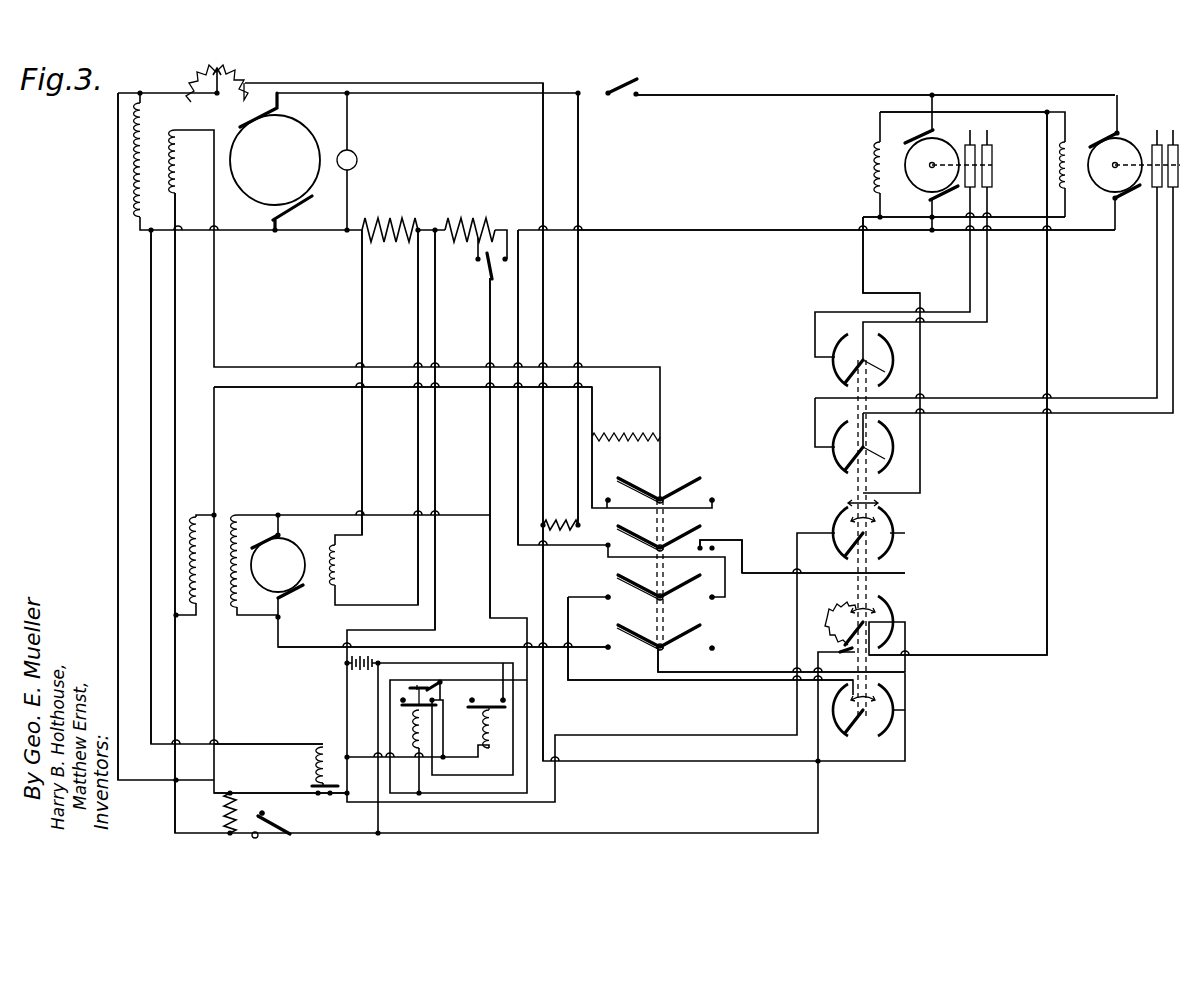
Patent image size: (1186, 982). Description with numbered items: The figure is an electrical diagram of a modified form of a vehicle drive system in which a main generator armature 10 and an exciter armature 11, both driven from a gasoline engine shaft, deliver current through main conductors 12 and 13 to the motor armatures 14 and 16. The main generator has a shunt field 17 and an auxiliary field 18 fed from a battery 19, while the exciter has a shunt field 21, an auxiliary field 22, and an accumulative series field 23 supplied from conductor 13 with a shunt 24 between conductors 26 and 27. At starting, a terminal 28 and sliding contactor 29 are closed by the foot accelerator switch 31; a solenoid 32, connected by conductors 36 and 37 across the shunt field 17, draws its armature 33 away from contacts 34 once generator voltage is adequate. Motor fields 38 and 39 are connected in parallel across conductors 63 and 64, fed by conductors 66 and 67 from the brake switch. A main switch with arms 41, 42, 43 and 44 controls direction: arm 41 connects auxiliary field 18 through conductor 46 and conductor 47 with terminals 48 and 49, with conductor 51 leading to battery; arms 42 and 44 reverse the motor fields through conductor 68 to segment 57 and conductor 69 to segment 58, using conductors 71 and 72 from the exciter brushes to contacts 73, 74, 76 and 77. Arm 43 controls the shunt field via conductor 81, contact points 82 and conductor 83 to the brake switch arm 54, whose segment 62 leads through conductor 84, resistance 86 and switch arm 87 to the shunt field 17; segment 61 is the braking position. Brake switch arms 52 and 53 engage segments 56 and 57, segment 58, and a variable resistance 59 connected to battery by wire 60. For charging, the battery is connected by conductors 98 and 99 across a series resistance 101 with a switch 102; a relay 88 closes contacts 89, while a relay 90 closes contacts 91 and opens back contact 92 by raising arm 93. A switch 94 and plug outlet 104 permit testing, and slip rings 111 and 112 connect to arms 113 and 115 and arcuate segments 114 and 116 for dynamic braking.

The main generator armature 10 is at (298, 130).
The exciter armature 11 is at (292, 550).
The main conductor 12 is at (693, 94).
The main conductor 13 is at (693, 229).
The motor armature 14 is at (942, 153).
The motor armature 16 is at (1124, 143).
The shunt field 17 is at (134, 162).
The auxiliary field 18 is at (182, 162).
The battery 19 is at (349, 670).
The exciter shunt field 21 is at (243, 535).
The exciter auxiliary field 22 is at (190, 551).
The accumulative series field 23 is at (342, 560).
The shunt 24 is at (385, 244).
The conductor 26 is at (361, 303).
The conductor 27 is at (417, 303).
The terminal 28 is at (252, 830).
The sliding contactor 29 is at (262, 811).
The foot accelerator switch 31 is at (282, 826).
The solenoid 32 is at (280, 768).
The armature 33 is at (324, 744).
The contacts 34 is at (331, 795).
The electrical conductor 36 is at (117, 333).
The electrical conductor 37 is at (150, 293).
The motor field 38 is at (874, 165).
The motor field 39 is at (1070, 145).
The switch arm 41 is at (683, 480).
The switch arm 42 is at (676, 545).
The switch arm 43 is at (672, 594).
The switch arm 44 is at (672, 644).
The conductor 46 is at (620, 367).
The conductor 47 is at (460, 388).
The terminal 48 is at (607, 495).
The terminal 49 is at (714, 498).
The conductor 51 is at (177, 667).
The brake switch arm 52 is at (840, 527).
The brake switch arm 53 is at (850, 636).
The brake switch arm 54 is at (858, 726).
The contact segment 56 is at (840, 548).
The contact segment 57 is at (890, 521).
The switch segment 58 is at (890, 611).
The variable resistance element 59 is at (837, 606).
The wire 60 is at (838, 652).
The contact segment 61 is at (846, 728).
The contact segment 62 is at (890, 693).
The conductor 63 is at (1010, 113).
The conductor 64 is at (1000, 214).
The conductor 66 is at (1048, 450).
The conductor 67 is at (862, 264).
The conductor 68 is at (743, 554).
The conductor 69 is at (744, 681).
The conductor 71 is at (472, 514).
The conductor 72 is at (305, 646).
The contact member 73 is at (606, 545).
The contact member 74 is at (714, 646).
The contact point 76 is at (607, 649).
The contact point 77 is at (713, 546).
The conductor 81 is at (580, 311).
The contact points 82 is at (606, 595).
The conductor 83 is at (655, 673).
The conductor 84 is at (544, 332).
The resistance 86 is at (236, 70).
The switch arm 87 is at (210, 80).
The relay 88 is at (484, 734).
The contacts 89 is at (502, 698).
The relay 90 is at (414, 736).
The contacts 91 is at (401, 700).
The back contact 92 is at (440, 681).
The arm 93 is at (418, 686).
The switch 94 is at (616, 87).
The conductor 98 is at (436, 452).
The conductor 99 is at (489, 476).
The series resistance 101 is at (472, 216).
The switch 102 is at (486, 270).
The plug outlet 104 is at (357, 161).
The slip rings 111 is at (987, 145).
The slip rings 112 is at (1173, 145).
The arm 113 is at (880, 376).
The arcuate segment 114 is at (835, 370).
The arm 115 is at (880, 463).
The arcuate segment 116 is at (835, 456).